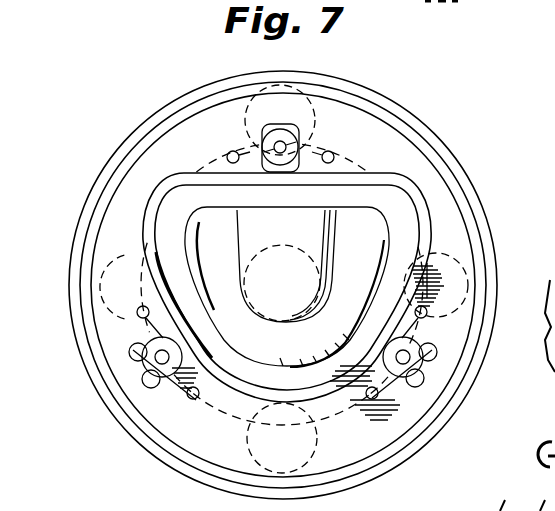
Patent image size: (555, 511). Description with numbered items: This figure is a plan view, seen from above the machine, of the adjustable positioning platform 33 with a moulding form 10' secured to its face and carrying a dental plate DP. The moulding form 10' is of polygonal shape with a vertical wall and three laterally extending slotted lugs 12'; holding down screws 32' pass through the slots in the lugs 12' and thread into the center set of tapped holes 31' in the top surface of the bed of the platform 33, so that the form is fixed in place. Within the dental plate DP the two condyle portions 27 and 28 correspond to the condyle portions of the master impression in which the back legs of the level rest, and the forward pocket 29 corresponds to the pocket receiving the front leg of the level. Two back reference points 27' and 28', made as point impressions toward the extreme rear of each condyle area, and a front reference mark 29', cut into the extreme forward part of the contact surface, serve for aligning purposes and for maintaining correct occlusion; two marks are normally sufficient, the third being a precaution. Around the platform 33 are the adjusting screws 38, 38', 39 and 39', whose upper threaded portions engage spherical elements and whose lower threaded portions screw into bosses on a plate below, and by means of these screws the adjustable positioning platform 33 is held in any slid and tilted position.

The moulding form 10' is at (322, 276).
The lugs 12' is at (396, 369).
The condyle portion 27 is at (348, 296).
The back reference point 27' is at (324, 252).
The condyle portion 28 is at (271, 286).
The back reference point 28' is at (276, 253).
The forward pocket 29 is at (267, 335).
The front reference mark 29' is at (260, 369).
The tapped holes 31' is at (265, 299).
The holding down screws 32' is at (163, 368).
The adjustable positioning platform 33 is at (392, 133).
The adjusting screw 38 is at (297, 110).
The adjusting screw 38' is at (305, 438).
The adjusting screw 39 is at (436, 276).
The adjusting screw 39' is at (77, 287).
The dental plate DP is at (242, 242).